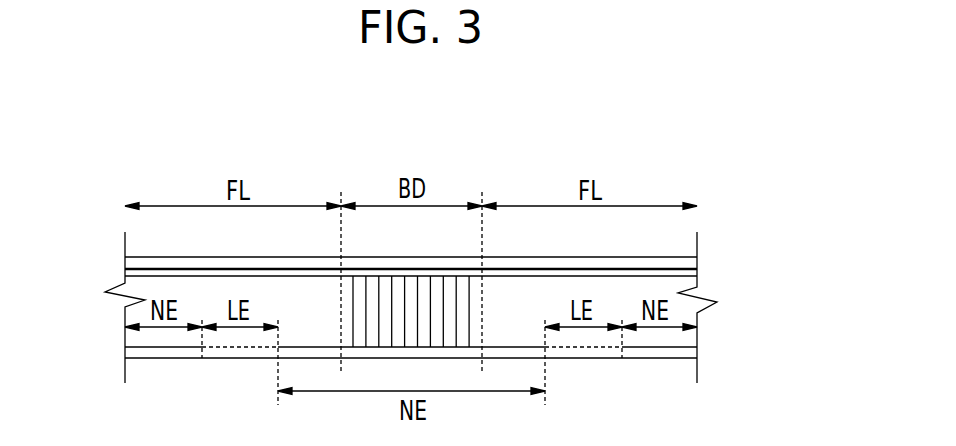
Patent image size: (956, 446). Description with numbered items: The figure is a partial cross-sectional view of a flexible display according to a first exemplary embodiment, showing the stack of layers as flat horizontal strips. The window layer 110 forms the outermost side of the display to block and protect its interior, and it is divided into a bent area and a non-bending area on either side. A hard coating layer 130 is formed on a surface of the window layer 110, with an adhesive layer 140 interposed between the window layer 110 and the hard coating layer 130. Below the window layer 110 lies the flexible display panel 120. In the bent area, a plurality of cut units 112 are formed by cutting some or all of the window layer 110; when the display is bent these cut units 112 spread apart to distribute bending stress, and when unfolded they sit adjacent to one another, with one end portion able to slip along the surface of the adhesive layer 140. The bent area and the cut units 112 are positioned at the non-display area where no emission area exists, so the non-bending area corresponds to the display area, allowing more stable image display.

The window layer 110 is at (687, 315).
The cut units 112 is at (449, 285).
The flexible display panel 120 is at (692, 354).
The hard coating layer 130 is at (692, 260).
The adhesive layer 140 is at (692, 273).